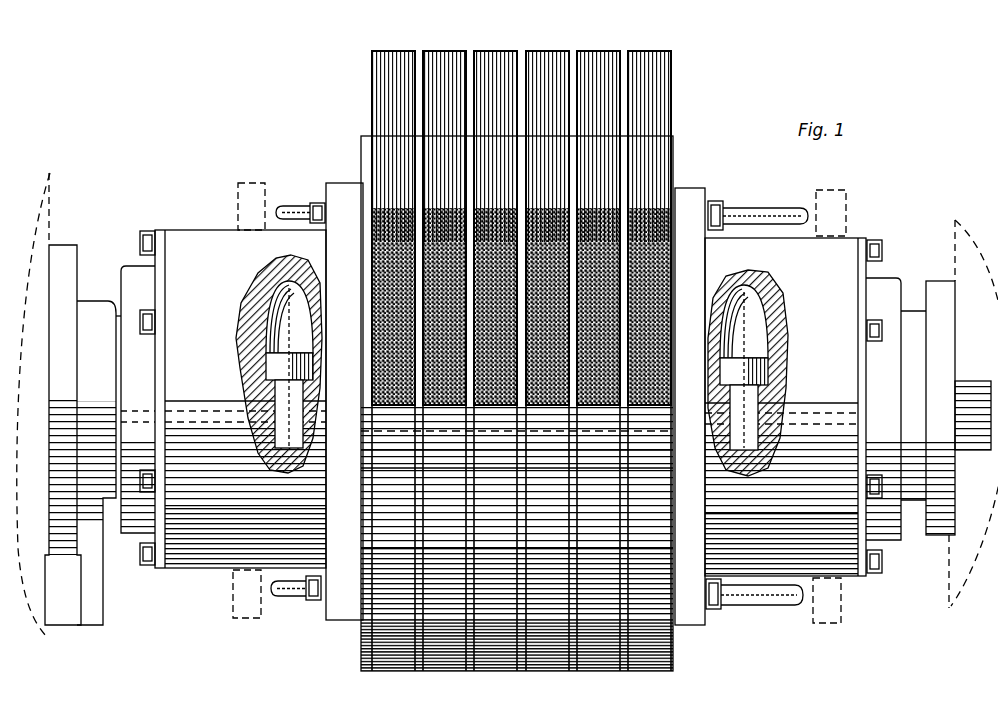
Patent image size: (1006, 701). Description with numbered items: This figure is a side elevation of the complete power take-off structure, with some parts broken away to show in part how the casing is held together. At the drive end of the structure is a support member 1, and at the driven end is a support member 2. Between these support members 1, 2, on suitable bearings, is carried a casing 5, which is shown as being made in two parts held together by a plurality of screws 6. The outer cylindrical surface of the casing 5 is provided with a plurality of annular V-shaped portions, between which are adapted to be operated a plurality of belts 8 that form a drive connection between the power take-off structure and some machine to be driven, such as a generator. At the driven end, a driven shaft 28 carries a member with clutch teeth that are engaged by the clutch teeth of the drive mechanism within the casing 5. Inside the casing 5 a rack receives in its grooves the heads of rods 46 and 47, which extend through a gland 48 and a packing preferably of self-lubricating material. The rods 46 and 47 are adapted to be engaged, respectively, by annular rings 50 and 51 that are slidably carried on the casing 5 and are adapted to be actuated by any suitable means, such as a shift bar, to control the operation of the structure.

The support member 1 is at (66, 237).
The support member 2 is at (930, 273).
The casing 5 is at (343, 175).
The screws 6 is at (262, 358).
The belts 8 is at (398, 43).
The driven shaft 28 is at (973, 373).
The rod 46 is at (290, 196).
The rod 47 is at (760, 200).
The gland 48 is at (308, 195).
The annular ring 50 is at (225, 606).
The annular ring 51 is at (818, 615).